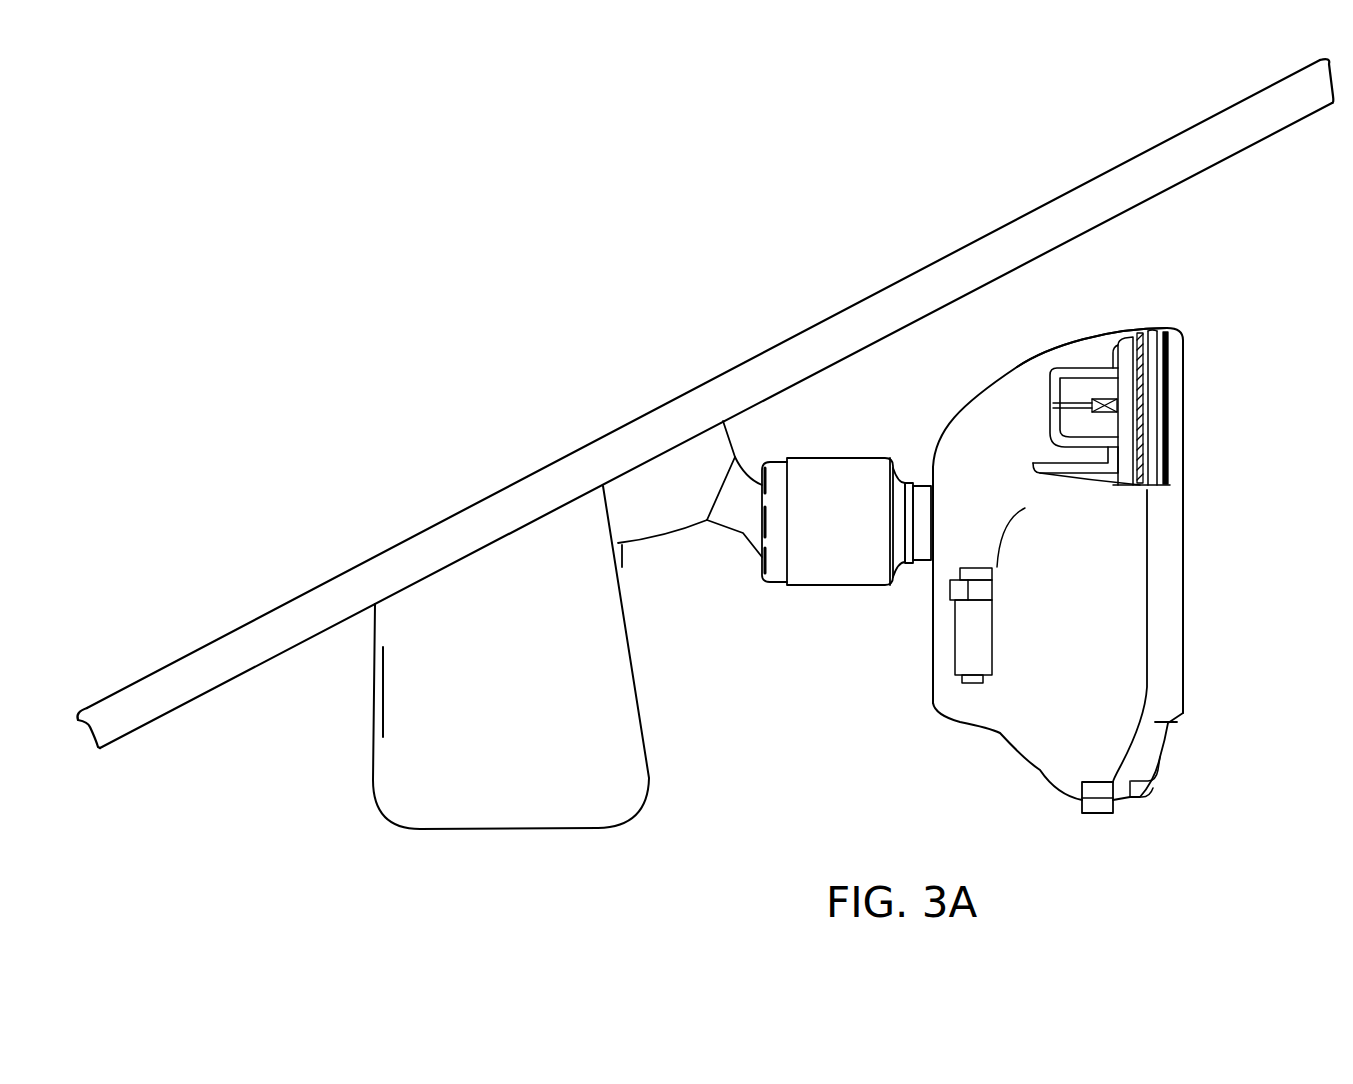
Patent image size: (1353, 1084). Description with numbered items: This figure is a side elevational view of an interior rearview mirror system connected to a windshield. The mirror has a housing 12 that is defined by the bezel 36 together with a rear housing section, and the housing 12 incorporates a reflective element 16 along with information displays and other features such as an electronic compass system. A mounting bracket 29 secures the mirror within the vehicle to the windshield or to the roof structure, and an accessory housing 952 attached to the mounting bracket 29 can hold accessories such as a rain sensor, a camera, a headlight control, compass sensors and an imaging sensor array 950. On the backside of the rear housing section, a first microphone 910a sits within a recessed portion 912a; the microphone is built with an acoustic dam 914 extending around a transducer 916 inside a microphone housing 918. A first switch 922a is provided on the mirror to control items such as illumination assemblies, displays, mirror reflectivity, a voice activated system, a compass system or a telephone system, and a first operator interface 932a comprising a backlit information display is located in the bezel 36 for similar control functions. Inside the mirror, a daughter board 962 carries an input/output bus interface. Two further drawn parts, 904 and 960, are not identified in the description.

The housing 12 is at (998, 728).
The reflective element 16 is at (1168, 423).
The mounting bracket 29 is at (767, 619).
The bezel 36 is at (1163, 682).
The housing wall 904 is at (930, 703).
The first microphone 910a is at (1055, 358).
The recessed portion 912a is at (1050, 450).
The acoustic dam 914 is at (1080, 398).
The transducer 916 is at (1148, 330).
The microphone housing 918 is at (1050, 377).
The first switch 922a is at (1098, 807).
The first operator interface 932a is at (1160, 782).
The imaging sensor array 950 is at (375, 697).
The accessory housing 952 is at (617, 730).
The first layer 960 is at (1168, 383).
The daughter board 962 is at (1168, 437).